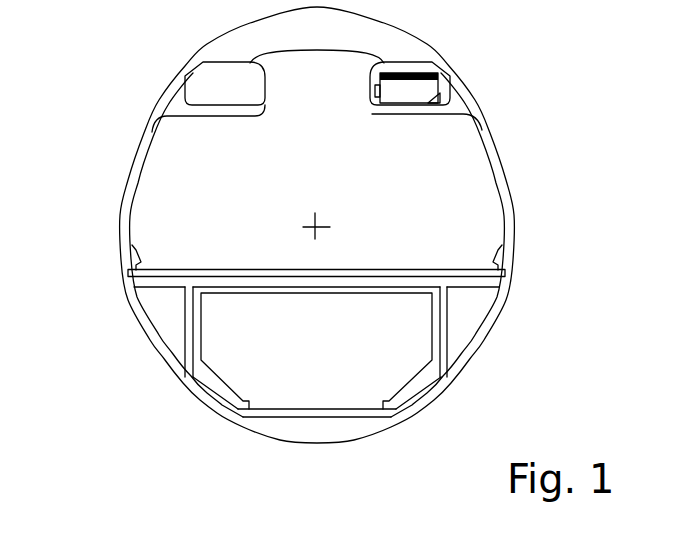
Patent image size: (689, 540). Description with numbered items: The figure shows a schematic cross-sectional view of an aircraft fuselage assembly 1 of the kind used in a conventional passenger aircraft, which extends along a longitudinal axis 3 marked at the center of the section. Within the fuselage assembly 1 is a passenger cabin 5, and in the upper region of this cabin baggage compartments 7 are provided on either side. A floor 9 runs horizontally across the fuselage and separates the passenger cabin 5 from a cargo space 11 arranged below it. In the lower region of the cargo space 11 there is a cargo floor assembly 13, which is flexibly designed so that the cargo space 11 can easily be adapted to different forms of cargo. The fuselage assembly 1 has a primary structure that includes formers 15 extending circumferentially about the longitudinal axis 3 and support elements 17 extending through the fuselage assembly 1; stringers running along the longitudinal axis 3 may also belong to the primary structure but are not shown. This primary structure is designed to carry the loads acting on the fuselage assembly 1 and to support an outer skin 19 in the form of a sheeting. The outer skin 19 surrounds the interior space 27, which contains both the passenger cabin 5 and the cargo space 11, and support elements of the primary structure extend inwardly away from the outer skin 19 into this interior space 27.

The aircraft fuselage assembly 1 is at (95, 145).
The longitudinal axis 3 is at (316, 226).
The passenger cabin 5 is at (460, 142).
The baggage compartments 7 is at (203, 85).
The floor 9 is at (445, 272).
The cargo space 11 is at (232, 368).
The cargo floor assembly 13 is at (298, 402).
The formers 15 is at (502, 172).
The support elements 17 is at (190, 320).
The outer skin 19 is at (490, 310).
The interior space 27 is at (338, 349).